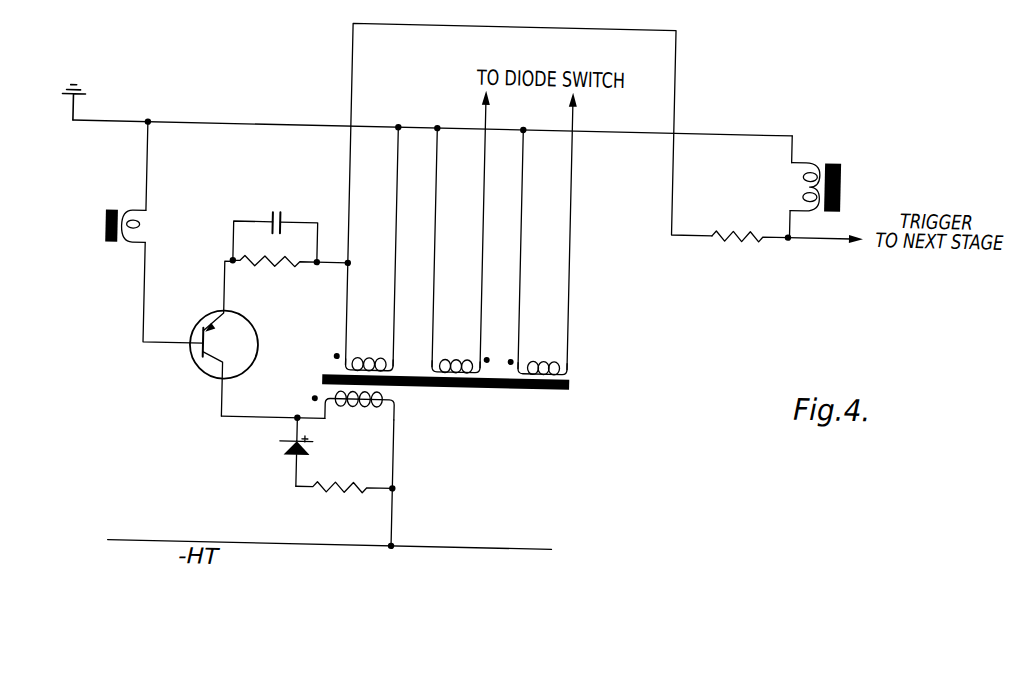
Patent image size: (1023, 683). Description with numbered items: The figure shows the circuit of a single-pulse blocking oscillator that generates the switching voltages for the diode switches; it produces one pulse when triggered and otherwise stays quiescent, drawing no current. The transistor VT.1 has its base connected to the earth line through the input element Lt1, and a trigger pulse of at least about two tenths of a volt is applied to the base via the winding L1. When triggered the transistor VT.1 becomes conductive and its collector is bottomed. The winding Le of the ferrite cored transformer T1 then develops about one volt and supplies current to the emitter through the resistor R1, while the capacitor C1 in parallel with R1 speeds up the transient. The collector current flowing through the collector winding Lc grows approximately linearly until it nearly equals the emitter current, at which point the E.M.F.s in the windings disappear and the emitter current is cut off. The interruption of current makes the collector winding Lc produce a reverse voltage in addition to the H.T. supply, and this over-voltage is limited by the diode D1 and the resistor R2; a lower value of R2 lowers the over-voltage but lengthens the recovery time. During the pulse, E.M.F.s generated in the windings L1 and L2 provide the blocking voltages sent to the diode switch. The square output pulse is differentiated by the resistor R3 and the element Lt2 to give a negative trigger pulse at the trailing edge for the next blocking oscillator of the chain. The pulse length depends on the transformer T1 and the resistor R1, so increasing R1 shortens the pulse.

The trigger input inductor Lt1 is at (141, 226).
The capacitor C1 is at (276, 221).
The resistor R1 is at (274, 273).
The transistor VT.1 is at (248, 339).
The winding Le is at (363, 355).
The winding L1 is at (461, 356).
The winding L2 is at (537, 356).
The ferrite cored transformer T1 is at (460, 380).
The collector winding Lc is at (353, 415).
The diode D1 is at (283, 452).
The resistor R2 is at (344, 469).
The resistor R3 is at (750, 223).
The differentiating inductor Lt2 is at (801, 187).